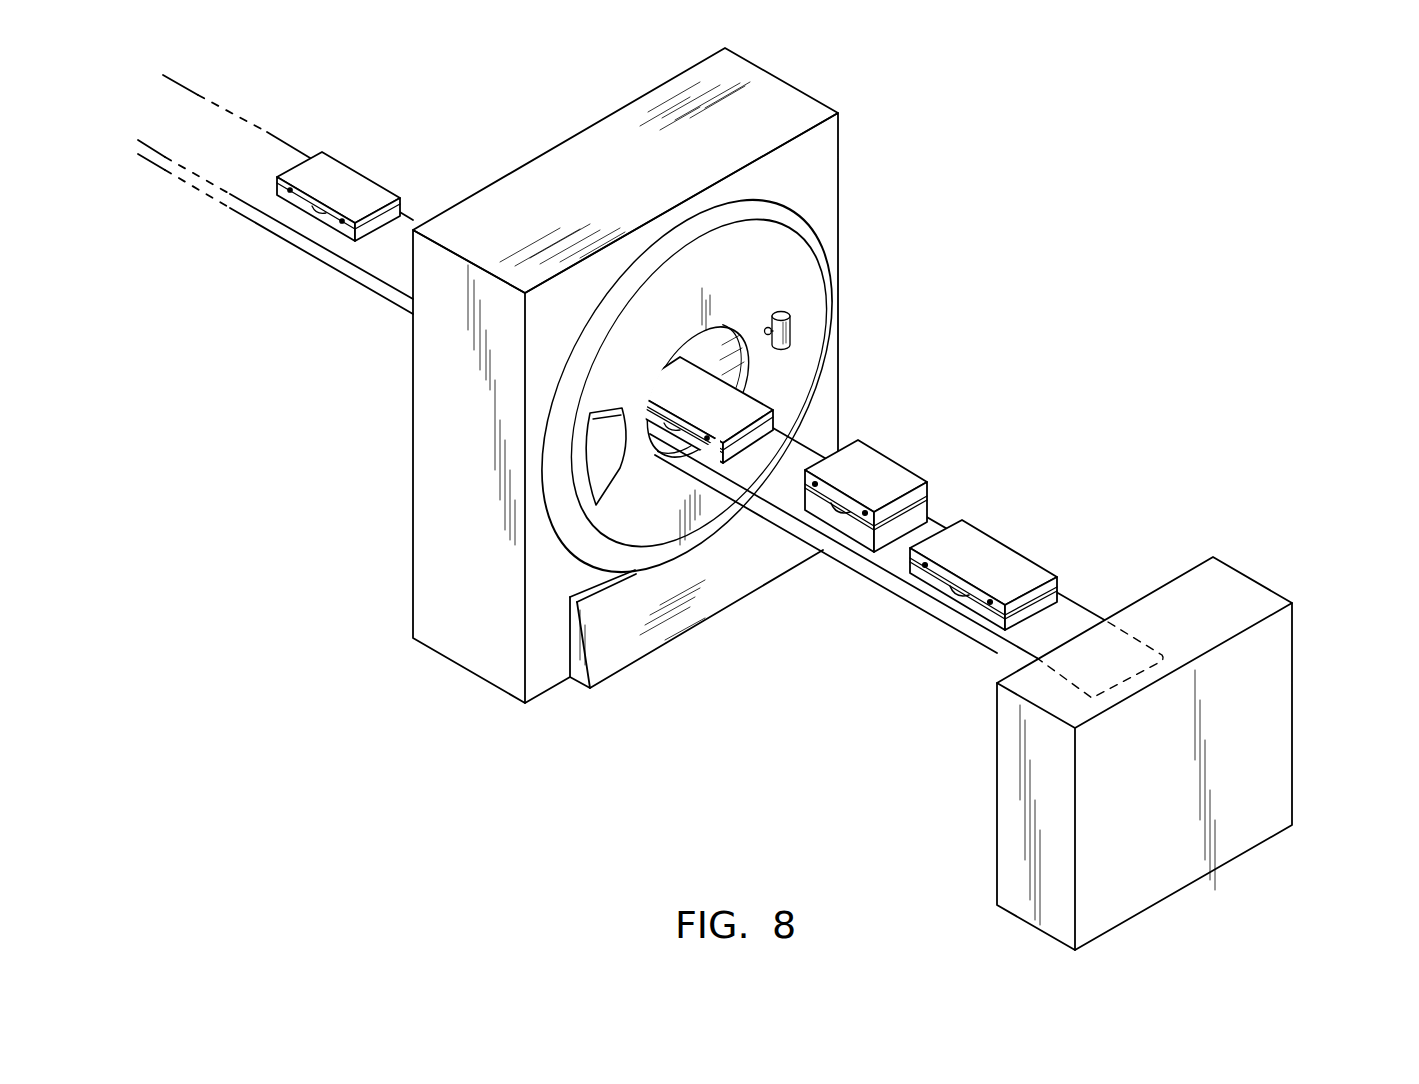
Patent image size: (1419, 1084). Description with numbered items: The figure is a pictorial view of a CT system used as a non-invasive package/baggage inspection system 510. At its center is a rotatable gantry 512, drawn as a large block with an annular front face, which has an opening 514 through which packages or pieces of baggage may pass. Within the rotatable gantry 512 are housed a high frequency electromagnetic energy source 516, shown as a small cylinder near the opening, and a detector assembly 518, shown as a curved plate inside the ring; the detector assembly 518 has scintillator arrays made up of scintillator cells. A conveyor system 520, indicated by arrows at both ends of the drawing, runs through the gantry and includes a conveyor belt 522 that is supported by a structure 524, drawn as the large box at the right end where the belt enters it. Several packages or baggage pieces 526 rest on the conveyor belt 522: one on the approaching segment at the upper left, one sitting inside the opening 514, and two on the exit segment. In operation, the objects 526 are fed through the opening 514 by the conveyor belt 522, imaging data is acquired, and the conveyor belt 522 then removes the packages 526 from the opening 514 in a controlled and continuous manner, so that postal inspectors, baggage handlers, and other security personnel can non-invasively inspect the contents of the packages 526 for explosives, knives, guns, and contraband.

The package/baggage inspection system 510 is at (1015, 389).
The rotatable gantry 512 is at (773, 272).
The opening 514 is at (737, 322).
The high frequency electromagnetic energy source 516 is at (792, 332).
The detector assembly 518 is at (612, 423).
The conveyor system 520 is at (151, 199).
The conveyor belt 522 is at (383, 261).
The structure 524 is at (1277, 703).
The packages or baggage pieces 526 is at (353, 178).